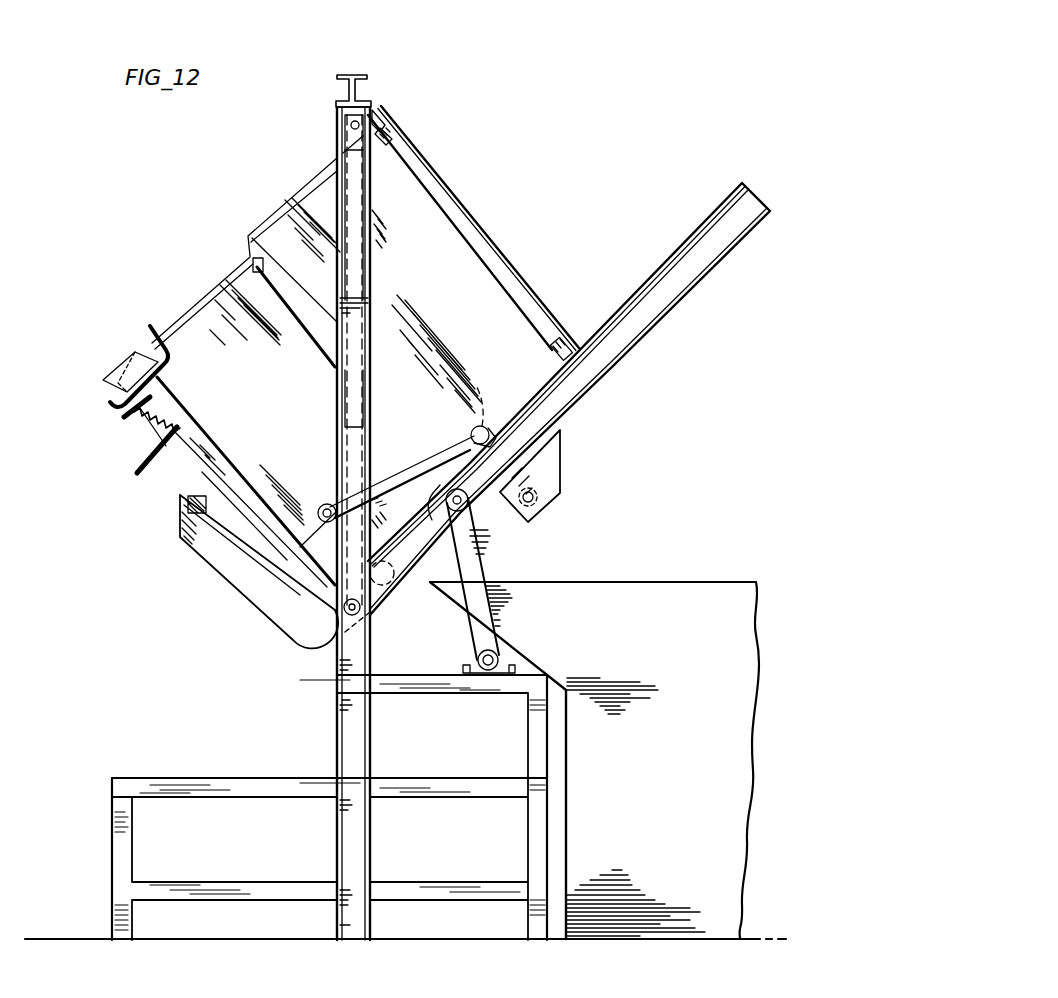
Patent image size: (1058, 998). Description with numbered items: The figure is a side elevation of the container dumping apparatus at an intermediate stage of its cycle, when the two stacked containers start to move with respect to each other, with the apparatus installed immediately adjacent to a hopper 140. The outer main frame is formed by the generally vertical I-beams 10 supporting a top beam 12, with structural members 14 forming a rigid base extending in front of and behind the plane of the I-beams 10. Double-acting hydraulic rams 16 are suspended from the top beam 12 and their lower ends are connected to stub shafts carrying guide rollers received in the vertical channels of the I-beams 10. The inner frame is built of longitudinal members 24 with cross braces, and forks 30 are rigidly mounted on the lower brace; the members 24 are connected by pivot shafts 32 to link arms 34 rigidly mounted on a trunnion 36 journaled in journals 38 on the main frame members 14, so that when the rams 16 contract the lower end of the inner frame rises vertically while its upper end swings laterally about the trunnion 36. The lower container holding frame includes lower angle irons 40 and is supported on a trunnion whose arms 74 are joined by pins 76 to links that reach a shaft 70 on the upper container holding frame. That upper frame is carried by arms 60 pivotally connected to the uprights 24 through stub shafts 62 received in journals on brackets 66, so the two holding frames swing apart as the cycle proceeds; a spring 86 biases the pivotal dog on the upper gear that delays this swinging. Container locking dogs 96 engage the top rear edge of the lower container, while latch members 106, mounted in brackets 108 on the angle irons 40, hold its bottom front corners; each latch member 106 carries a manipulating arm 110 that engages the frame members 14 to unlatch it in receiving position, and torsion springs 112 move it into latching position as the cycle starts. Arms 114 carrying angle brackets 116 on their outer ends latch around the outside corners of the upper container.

The I-beam 10 is at (369, 268).
The top beam 12 is at (362, 90).
The structural member 14 is at (115, 838).
The double-acting hydraulic ram 16 is at (357, 195).
The longitudinal member 24 is at (650, 304).
The fork 30 is at (243, 596).
The pivot shaft 32 is at (470, 512).
The link arm 34 is at (473, 633).
The trunnion 36 is at (488, 678).
The journal 38 is at (463, 672).
The lower angle iron 40 is at (112, 381).
The arm 60 is at (472, 433).
The stub shaft 62 is at (543, 498).
The bracket 66 is at (553, 457).
The shaft 70 is at (482, 426).
The arm 74 is at (328, 518).
The pin 76 is at (327, 504).
The spring 86 is at (406, 474).
The container locking dog 96 is at (432, 512).
The latch member 106 is at (150, 330).
The bracket 108 is at (122, 414).
The manipulating arm 110 is at (140, 472).
The torsion spring 112 is at (133, 428).
The arm 114 is at (469, 207).
The angle bracket 116 is at (383, 132).
The hopper 140 is at (664, 590).